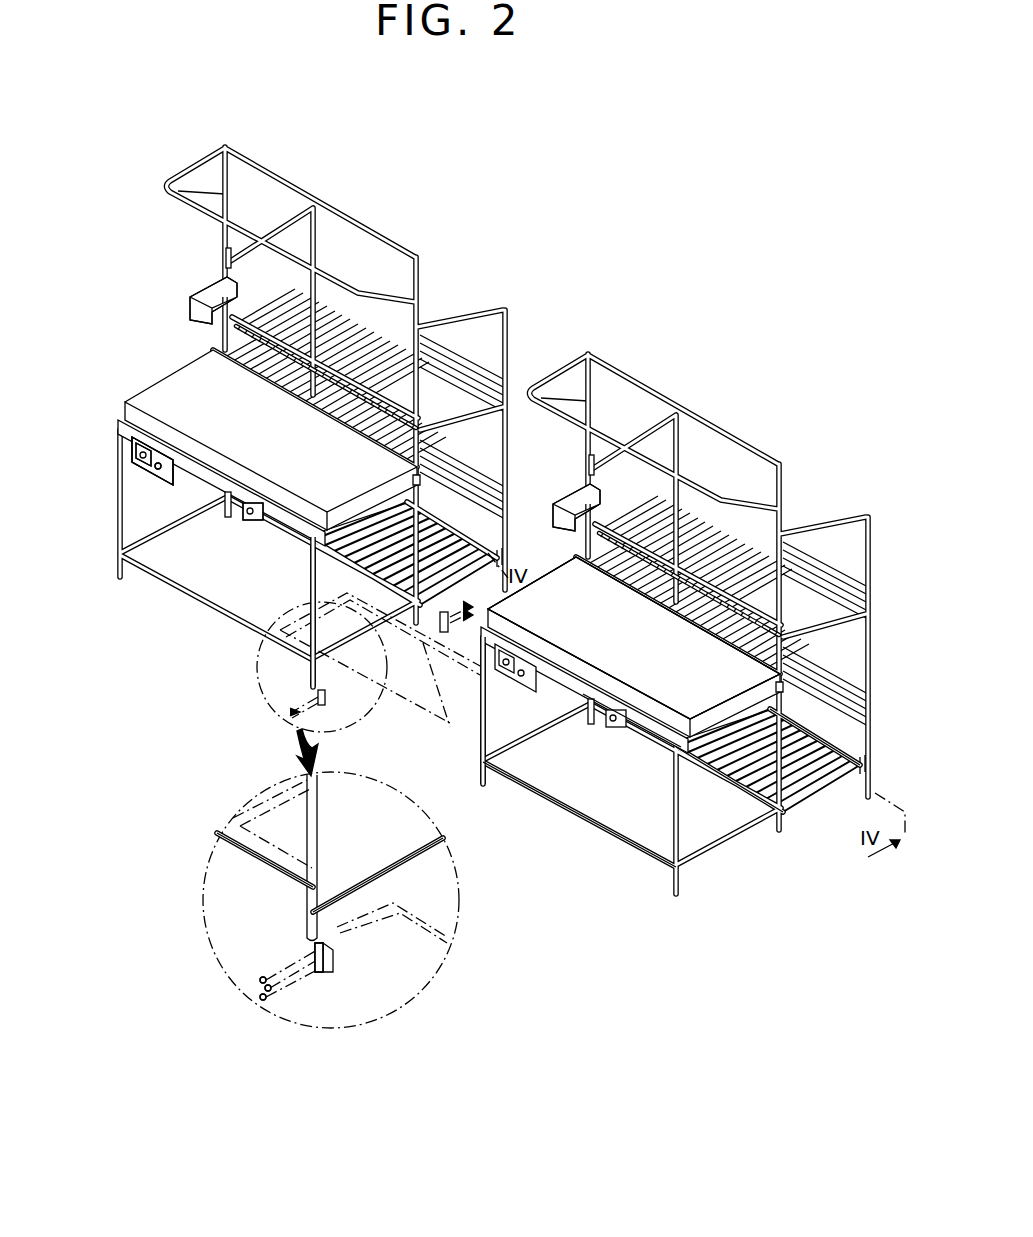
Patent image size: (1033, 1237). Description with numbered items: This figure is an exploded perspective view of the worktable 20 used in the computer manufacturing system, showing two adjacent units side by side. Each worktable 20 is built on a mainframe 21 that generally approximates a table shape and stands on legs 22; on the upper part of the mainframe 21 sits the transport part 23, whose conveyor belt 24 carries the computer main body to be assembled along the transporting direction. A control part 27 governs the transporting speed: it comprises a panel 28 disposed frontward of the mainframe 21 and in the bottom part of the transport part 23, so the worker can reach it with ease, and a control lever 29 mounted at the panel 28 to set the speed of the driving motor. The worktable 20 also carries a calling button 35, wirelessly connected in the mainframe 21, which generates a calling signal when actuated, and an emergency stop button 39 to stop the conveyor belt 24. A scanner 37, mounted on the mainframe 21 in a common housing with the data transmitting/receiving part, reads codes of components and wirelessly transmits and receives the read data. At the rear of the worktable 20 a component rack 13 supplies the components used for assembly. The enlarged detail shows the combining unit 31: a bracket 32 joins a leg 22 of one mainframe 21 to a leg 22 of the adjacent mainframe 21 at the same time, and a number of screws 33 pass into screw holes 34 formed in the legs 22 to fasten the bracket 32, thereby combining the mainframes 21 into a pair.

The component rack 13 is at (815, 803).
The worktable 20 is at (772, 843).
The mainframe 21 is at (563, 684).
The legs 22 is at (313, 672).
The transport part 23 is at (658, 713).
The conveyor belt 24 is at (693, 682).
The control part 27 is at (69, 516).
The panel 28 is at (157, 469).
The control lever 29 is at (137, 457).
The combining unit 31 is at (277, 1084).
The bracket 32 is at (447, 635).
The screws 33 is at (268, 1000).
The screw holes 34 is at (318, 786).
The calling button 35 is at (168, 478).
The scanner 37 is at (207, 294).
The emergency stop button 39 is at (250, 519).